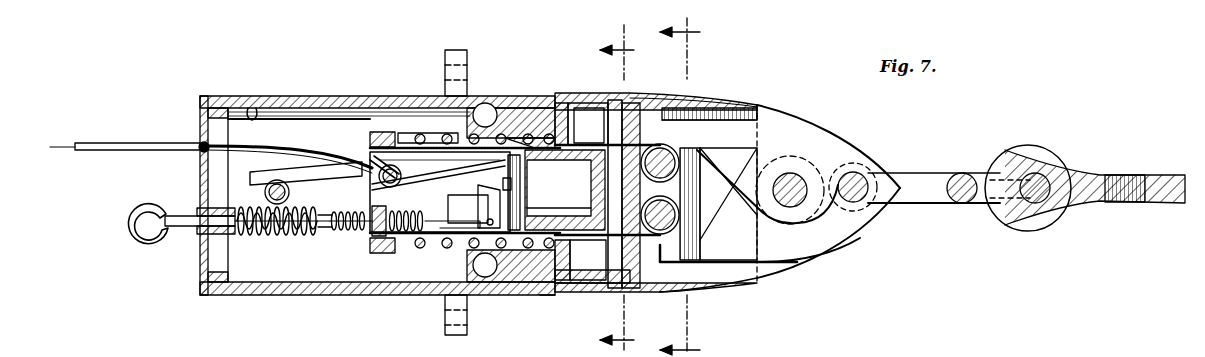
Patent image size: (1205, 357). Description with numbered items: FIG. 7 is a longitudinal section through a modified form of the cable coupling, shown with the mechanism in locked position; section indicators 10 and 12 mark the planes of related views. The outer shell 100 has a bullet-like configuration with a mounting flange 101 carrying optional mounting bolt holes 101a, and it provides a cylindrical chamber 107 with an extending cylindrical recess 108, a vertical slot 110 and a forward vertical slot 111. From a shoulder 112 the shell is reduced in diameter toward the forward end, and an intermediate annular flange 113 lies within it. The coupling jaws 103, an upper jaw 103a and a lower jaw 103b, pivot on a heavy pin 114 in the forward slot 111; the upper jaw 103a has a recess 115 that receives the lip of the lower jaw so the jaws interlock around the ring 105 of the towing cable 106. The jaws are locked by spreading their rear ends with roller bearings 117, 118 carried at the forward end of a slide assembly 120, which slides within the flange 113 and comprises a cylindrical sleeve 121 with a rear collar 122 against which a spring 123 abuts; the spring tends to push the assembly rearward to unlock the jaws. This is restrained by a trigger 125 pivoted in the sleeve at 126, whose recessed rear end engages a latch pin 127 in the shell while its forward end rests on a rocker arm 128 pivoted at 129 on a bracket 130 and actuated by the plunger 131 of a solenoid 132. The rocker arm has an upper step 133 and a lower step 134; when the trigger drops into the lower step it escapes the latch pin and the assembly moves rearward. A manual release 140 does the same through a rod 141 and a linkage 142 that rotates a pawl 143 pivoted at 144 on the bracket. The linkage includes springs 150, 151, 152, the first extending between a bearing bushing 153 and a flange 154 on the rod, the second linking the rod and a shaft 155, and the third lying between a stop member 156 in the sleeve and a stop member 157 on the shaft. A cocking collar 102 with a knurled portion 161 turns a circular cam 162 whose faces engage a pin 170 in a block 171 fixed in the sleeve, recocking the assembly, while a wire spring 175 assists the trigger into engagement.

The shell 100 is at (290, 96).
The mounting flange 101 is at (458, 50).
The mounting bolt holes 101a is at (485, 108).
The cocking collar 102 is at (636, 95).
The coupling jaws 103 is at (825, 128).
The upper jaw 103a is at (855, 155).
The lower jaw 103b is at (845, 237).
The ring 105 is at (945, 175).
The towing cable 106 is at (1070, 178).
The cylindrical chamber 107 is at (252, 108).
The cylindrical recess 108 is at (510, 128).
The vertical slot 110 is at (588, 115).
The forward vertical slot 111 is at (712, 112).
The shoulder 112 is at (562, 300).
The intermediate annular flange 113 is at (540, 300).
The heavy pin 114 is at (790, 172).
The recess 115 is at (870, 175).
The roller bearing 117 is at (700, 152).
The roller bearing 118 is at (688, 236).
The slide assembly 120 is at (450, 305).
The cylindrical sleeve 121 is at (412, 135).
The collar 122 is at (386, 132).
The spring 123 is at (445, 134).
The trigger 125 is at (290, 170).
The trigger pivot 126 is at (377, 132).
The latch pin 127 is at (265, 192).
The rocker arm 128 is at (522, 172).
The rocker arm pivot 129 is at (540, 210).
The bracket 130 is at (445, 198).
The plunger 131 is at (522, 186).
The solenoid 132 is at (525, 250).
The upper step 133 is at (540, 138).
The lower step 134 is at (495, 166).
The manual release 140 is at (190, 228).
The rod 141 is at (135, 220).
The linkage 142 is at (295, 236).
The pawl 143 is at (484, 188).
The pawl pivot 144 is at (468, 209).
The spring 150 is at (258, 236).
The spring 151 is at (340, 232).
The spring 152 is at (378, 212).
The bearing bushing 153 is at (210, 238).
The flange 154 is at (312, 236).
The shaft 155 is at (430, 240).
The stop member 156 is at (368, 237).
The stop member 157 is at (395, 243).
The knurled portion 161 is at (666, 90).
The circular cam 162 is at (580, 282).
The pin 170 is at (632, 290).
The block 171 is at (595, 125).
The wire spring 175 is at (368, 160).
The section line 10 is at (615, 190).
The section line 12 is at (688, 181).